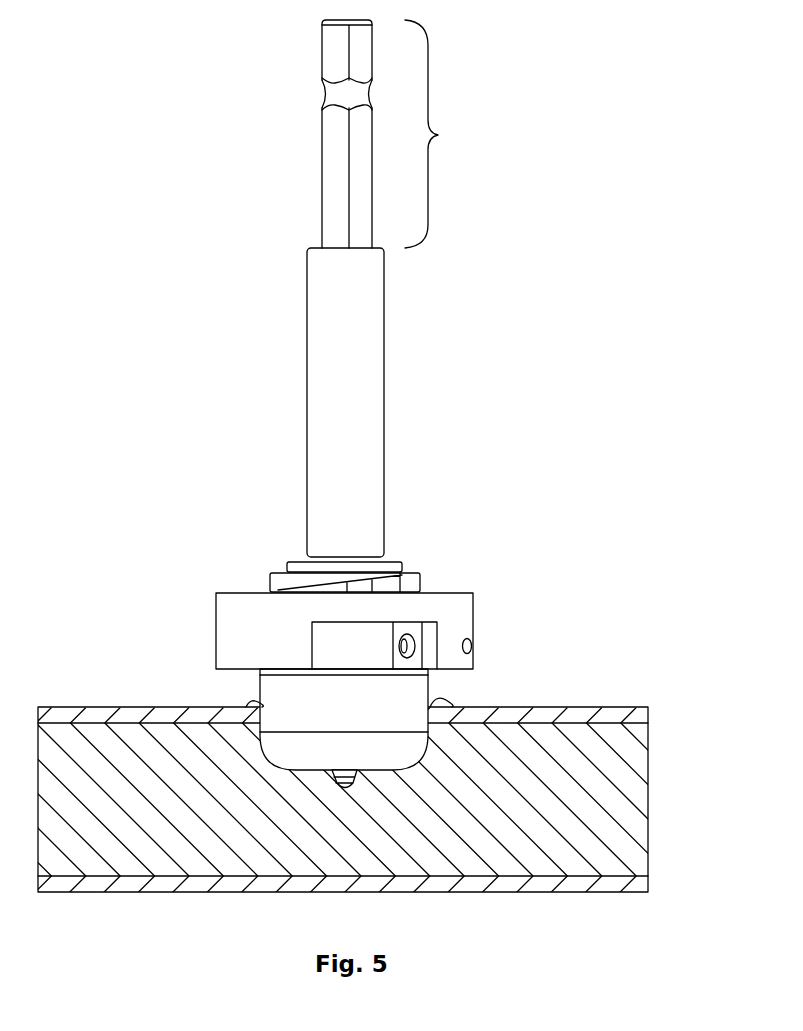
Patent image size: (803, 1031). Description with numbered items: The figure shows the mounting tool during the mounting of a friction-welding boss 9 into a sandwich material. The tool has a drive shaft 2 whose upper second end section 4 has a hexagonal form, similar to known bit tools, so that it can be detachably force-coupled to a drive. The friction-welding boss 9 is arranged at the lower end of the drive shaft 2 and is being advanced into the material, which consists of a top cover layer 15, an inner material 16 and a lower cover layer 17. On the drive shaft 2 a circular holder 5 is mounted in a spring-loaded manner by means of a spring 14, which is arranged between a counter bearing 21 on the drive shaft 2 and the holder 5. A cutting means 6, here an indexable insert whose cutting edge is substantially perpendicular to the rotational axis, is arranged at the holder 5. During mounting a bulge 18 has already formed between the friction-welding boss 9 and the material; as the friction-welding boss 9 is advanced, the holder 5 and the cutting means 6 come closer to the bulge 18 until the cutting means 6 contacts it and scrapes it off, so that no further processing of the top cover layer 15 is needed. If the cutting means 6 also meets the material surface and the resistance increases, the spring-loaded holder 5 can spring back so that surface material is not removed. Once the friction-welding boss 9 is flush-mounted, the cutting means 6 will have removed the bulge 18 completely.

The drive shaft 2 is at (323, 341).
The second end section 4 is at (397, 134).
The holder 5 is at (230, 627).
The cutting means 6 is at (421, 653).
The friction-welding boss 9 is at (368, 720).
The spring 14 is at (274, 585).
The top cover layer 15 is at (645, 713).
The inner material 16 is at (645, 797).
The lower cover layer 17 is at (648, 878).
The bulge 18 is at (248, 704).
The counter bearing 21 is at (396, 563).